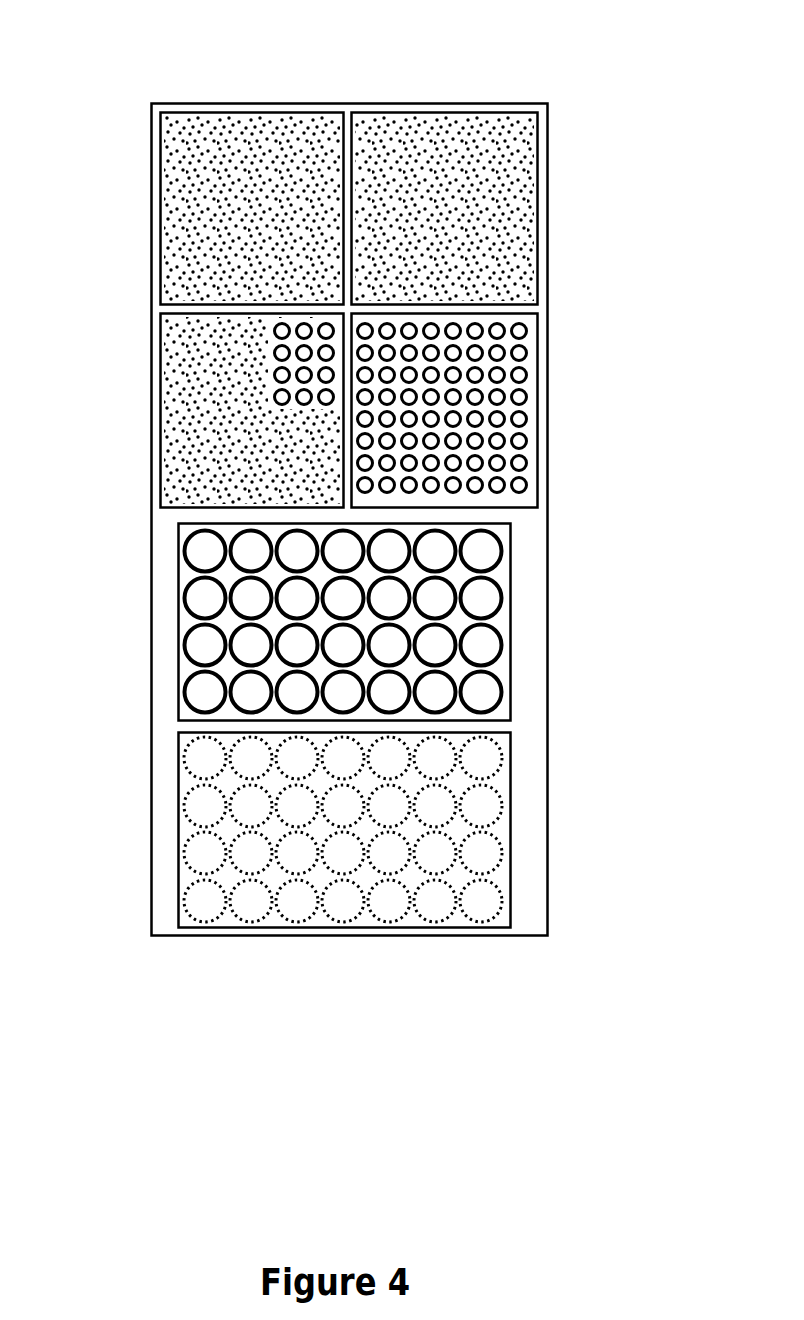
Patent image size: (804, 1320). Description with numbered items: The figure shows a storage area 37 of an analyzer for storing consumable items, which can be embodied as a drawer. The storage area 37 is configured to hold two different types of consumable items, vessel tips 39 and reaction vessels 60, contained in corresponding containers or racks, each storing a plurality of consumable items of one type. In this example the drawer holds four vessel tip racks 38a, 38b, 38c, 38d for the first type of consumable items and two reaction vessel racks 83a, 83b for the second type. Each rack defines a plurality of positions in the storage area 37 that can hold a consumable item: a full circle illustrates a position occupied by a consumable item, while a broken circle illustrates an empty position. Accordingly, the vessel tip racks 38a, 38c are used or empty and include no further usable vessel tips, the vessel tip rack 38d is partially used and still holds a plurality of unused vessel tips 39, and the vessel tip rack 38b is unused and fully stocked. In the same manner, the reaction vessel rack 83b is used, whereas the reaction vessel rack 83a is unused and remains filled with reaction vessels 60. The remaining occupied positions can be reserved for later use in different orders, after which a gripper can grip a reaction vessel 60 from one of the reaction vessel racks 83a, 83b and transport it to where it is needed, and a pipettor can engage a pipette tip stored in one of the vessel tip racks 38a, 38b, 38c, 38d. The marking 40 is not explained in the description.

The storage area 37 is at (540, 562).
The vessel tip rack 38a is at (525, 145).
The vessel tip rack 38b is at (518, 391).
The vessel tip rack 38c is at (316, 120).
The vessel tip rack 38d is at (192, 425).
The vessel tips 39 is at (520, 330).
The textured surface 40 is at (168, 352).
The reaction vessel 60 is at (200, 637).
The reaction vessel rack 83a is at (360, 622).
The reaction vessel rack 83b is at (495, 828).